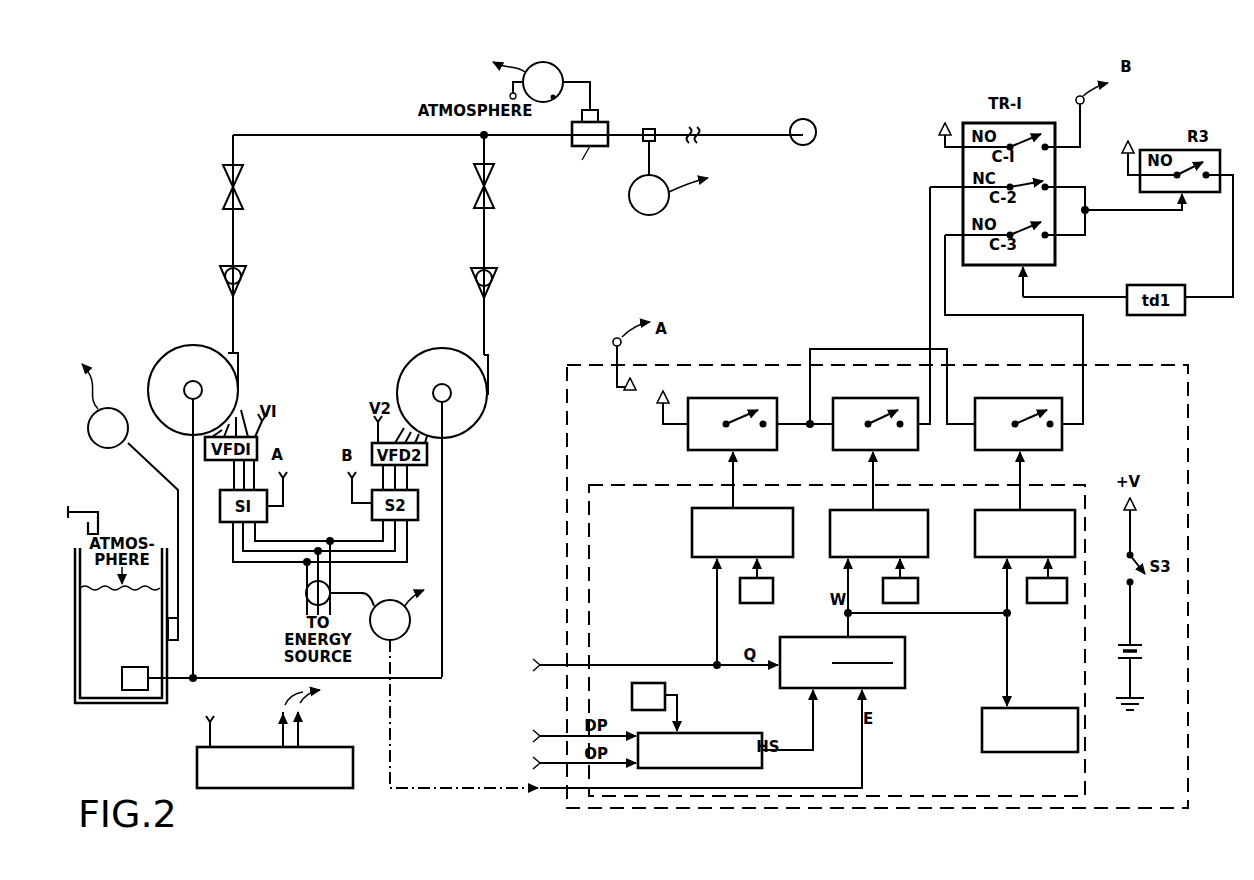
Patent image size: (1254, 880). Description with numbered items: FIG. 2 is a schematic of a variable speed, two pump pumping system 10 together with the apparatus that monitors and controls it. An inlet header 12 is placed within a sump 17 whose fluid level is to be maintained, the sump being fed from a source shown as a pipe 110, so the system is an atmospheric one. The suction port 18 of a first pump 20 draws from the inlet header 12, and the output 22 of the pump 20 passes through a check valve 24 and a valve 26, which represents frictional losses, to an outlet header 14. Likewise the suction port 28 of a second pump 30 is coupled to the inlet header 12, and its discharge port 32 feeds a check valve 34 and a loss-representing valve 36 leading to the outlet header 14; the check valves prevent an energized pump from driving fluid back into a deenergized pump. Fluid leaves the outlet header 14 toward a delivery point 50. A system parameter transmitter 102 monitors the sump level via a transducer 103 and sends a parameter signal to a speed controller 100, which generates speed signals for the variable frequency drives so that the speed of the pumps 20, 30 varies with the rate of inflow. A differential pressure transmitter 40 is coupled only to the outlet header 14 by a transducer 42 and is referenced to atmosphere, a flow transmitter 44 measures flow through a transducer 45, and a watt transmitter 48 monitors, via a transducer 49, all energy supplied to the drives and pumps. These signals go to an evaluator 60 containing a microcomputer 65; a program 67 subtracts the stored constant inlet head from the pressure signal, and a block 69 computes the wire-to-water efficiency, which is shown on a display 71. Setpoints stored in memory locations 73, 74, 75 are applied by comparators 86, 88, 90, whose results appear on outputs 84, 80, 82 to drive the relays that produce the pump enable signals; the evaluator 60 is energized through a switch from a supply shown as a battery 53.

The variable speed pump system 10 is at (353, 238).
The inlet header 12 is at (138, 690).
The outlet header 14 is at (590, 164).
The sump 17 is at (95, 703).
The suction port 18 is at (184, 392).
The first pump 20 is at (226, 393).
The output 22 is at (241, 356).
The check valve 24 is at (248, 278).
The valve 26 is at (246, 185).
The suction port 28 is at (452, 393).
The second pump 30 is at (406, 376).
The discharge port 32 is at (490, 355).
The check valve 34 is at (499, 278).
The valve 36 is at (497, 184).
The system differential pressure transmitter 40 is at (520, 78).
The transducer 42 is at (600, 118).
The flow transmitter 44 is at (645, 215).
The transducer 45 is at (649, 129).
The watt transmitter 48 is at (405, 636).
The transducer 49 is at (306, 596).
The delivery point 50 is at (806, 145).
The battery 53 is at (1144, 650).
The evaluator 60 is at (1196, 454).
The microcomputer system 65 is at (1107, 480).
The program 67 is at (718, 733).
The efficiency determination block 69 is at (905, 657).
The display 71 is at (982, 742).
The memory location 73 is at (745, 603).
The memory location 74 is at (918, 592).
The memory location 75 is at (1043, 603).
The computer output 80 is at (880, 478).
The computer output 82 is at (1025, 478).
The computer output 84 is at (745, 478).
The comparator 86 is at (692, 535).
The comparator 88 is at (830, 545).
The comparator 90 is at (975, 545).
The speed controller 100 is at (348, 747).
The system parameter transmitter 102 is at (115, 447).
The transducer 103 is at (168, 620).
The pipe 110 is at (102, 510).